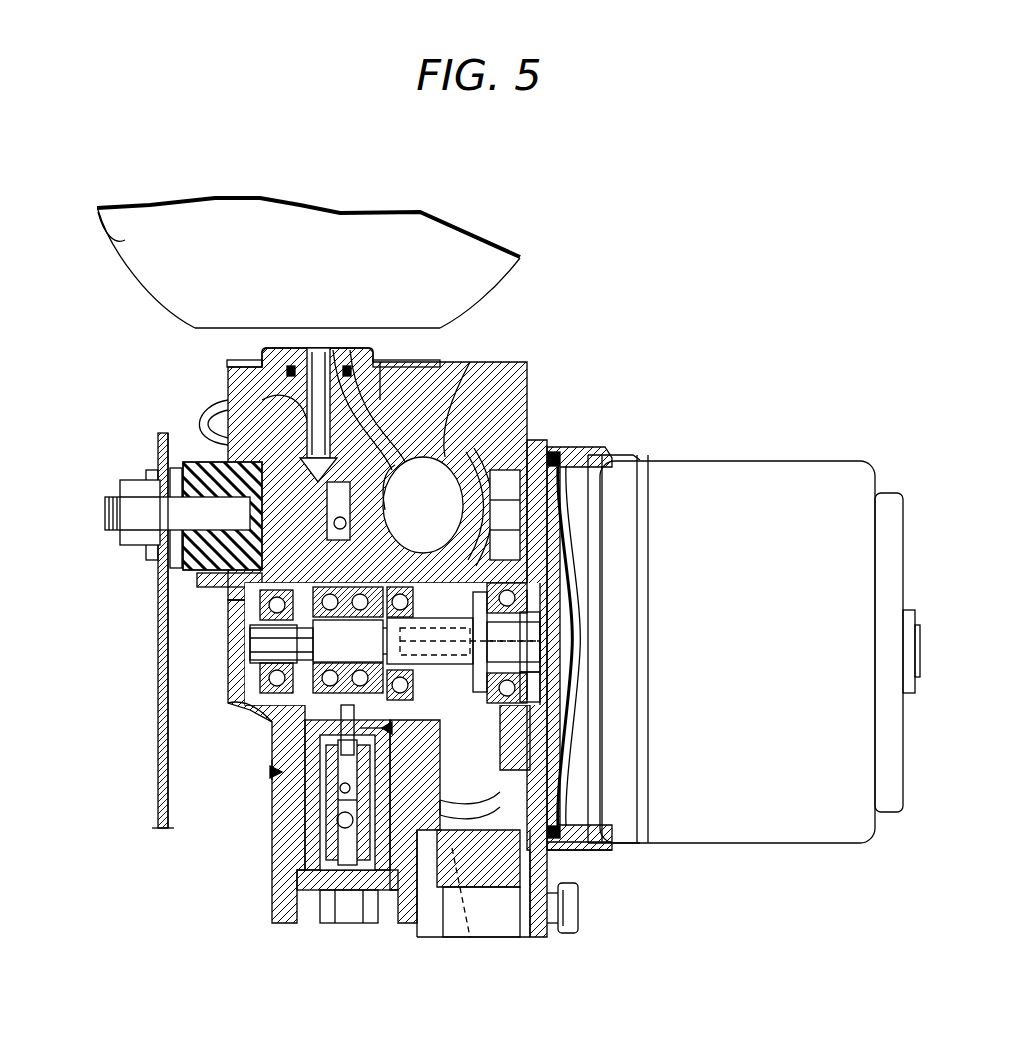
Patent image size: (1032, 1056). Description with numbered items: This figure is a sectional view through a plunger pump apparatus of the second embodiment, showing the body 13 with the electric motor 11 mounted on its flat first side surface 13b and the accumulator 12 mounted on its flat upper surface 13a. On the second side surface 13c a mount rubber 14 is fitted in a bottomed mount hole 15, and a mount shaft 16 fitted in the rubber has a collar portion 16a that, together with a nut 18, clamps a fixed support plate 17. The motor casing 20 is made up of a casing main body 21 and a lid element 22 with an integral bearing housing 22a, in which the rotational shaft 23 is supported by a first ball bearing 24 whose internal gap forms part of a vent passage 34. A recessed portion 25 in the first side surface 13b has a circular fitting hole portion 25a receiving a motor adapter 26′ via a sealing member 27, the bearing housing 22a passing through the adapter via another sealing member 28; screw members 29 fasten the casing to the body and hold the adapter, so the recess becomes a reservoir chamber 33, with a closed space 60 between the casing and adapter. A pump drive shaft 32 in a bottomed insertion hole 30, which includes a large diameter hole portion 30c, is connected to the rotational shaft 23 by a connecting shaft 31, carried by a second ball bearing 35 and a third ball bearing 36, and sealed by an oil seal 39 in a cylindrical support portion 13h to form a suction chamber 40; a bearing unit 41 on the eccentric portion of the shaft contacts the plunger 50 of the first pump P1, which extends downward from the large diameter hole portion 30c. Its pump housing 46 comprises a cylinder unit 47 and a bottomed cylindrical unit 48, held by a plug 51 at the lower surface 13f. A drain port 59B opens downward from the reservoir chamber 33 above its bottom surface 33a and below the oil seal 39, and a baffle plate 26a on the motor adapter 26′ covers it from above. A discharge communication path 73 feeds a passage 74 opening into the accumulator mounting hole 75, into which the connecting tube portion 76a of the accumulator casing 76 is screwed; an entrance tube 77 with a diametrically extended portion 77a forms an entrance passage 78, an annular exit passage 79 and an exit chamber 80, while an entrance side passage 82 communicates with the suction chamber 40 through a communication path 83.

The electric motor 11 is at (806, 482).
The accumulator 12 is at (436, 243).
The body 13 is at (500, 360).
The upper surface 13a is at (437, 360).
The first side surface 13b is at (527, 380).
The second side surface 13c is at (183, 452).
The lower surface 13f is at (408, 920).
The support portion 13h is at (570, 773).
The mount rubber 14 is at (193, 570).
The mount hole 15 is at (203, 470).
The mount shaft 16 is at (105, 508).
The collar portion 16a is at (158, 573).
The support plate 17 is at (157, 670).
The nut 18 is at (130, 488).
The motor casing 20 is at (690, 372).
The casing main body 21 is at (682, 467).
The lid element 22 is at (537, 440).
The bearing housing 22a is at (570, 748).
The rotational shaft 23 is at (573, 643).
The first ball bearing 24 is at (580, 693).
The recessed portion 25 is at (573, 850).
The fitting hole portion 25a is at (573, 853).
The motor adapter 26′ is at (580, 828).
The baffle plate 26a is at (418, 822).
The sealing member 27 is at (507, 887).
The sealing member 28 is at (556, 545).
The screw member 29 is at (573, 913).
The insertion hole 30 is at (237, 717).
The large diameter hole portion 30c is at (217, 628).
The connecting shaft 31 is at (527, 637).
The pump drive shaft 32 is at (429, 608).
The reservoir chamber 33 is at (555, 527).
The bottom surface 33a is at (470, 937).
The vent passage 34 is at (570, 582).
The second ball bearing 35 is at (392, 730).
The third ball bearing 36 is at (217, 703).
The oil seal 39 is at (560, 573).
The suction chamber 40 is at (265, 768).
The nut 41 is at (250, 638).
The pump housing 46 is at (268, 818).
The cylinder unit 47 is at (305, 845).
The bottomed cylindrical unit 48 is at (305, 895).
The plunger 50 is at (276, 771).
The plug 51 is at (302, 920).
The drain port 59B is at (447, 877).
The closed space 60 is at (570, 463).
The discharge communication path 73 is at (225, 597).
The passage 74 is at (479, 380).
The accumulator mounting hole 75 is at (293, 347).
The casing 76 is at (125, 240).
The connecting tube portion 76a is at (262, 385).
The entrance tube 77 is at (305, 405).
The diametrically extended portion 77a is at (190, 420).
The entrance passage 78 is at (320, 372).
The exit passage 79 is at (335, 350).
The exit chamber 80 is at (386, 362).
The entrance side passage 82 is at (527, 384).
The communication path 83 is at (396, 535).
The first pump P1 is at (270, 783).